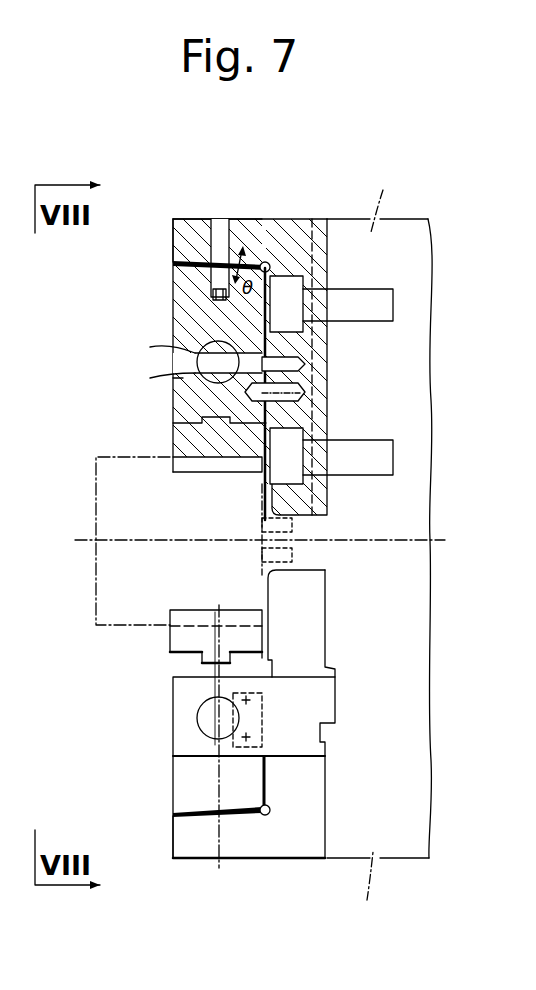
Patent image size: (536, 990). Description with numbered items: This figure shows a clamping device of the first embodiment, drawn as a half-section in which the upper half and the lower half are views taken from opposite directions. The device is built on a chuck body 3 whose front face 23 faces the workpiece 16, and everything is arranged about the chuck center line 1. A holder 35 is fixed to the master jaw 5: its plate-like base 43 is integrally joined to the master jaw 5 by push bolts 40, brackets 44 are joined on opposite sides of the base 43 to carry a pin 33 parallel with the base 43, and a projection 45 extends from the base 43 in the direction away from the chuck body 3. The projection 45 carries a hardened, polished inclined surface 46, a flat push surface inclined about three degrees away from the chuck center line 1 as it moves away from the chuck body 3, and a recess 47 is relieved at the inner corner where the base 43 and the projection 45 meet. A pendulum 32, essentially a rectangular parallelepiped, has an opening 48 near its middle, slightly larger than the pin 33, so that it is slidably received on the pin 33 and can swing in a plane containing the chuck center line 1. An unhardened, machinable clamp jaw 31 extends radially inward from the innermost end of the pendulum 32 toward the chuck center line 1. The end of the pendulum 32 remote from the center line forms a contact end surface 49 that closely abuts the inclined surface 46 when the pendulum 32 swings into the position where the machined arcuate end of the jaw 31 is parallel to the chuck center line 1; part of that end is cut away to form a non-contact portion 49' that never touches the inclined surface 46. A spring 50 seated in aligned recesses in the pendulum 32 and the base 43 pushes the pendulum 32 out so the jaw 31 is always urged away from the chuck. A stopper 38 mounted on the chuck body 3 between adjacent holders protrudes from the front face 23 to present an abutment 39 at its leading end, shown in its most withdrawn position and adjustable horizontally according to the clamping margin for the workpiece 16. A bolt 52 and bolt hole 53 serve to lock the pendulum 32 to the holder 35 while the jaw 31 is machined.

The chuck center line 1 is at (437, 552).
The chuck body 3 is at (427, 212).
The master jaw 5 is at (376, 545).
The workpiece 16 is at (96, 484).
The front face of chuck body 23 is at (326, 230).
The clamp jaw 31 is at (173, 437).
The pendulum 32 is at (173, 300).
The pin 33 is at (173, 343).
The holder 35 is at (299, 214).
The stopper 38 is at (285, 555).
The abutment 39 is at (262, 525).
The push bolt 40 is at (283, 290).
The base 43 is at (305, 348).
The bracket 44 is at (185, 705).
The projection 45 is at (173, 240).
The inclined surface 46 is at (173, 268).
The recess 47 is at (262, 262).
The opening 48 is at (198, 360).
The contact end surface 49 is at (190, 534).
The non-contact portion 49' is at (231, 863).
The spring 50 is at (305, 395).
The bolt 52 is at (173, 380).
The bolt hole 53 is at (218, 221).